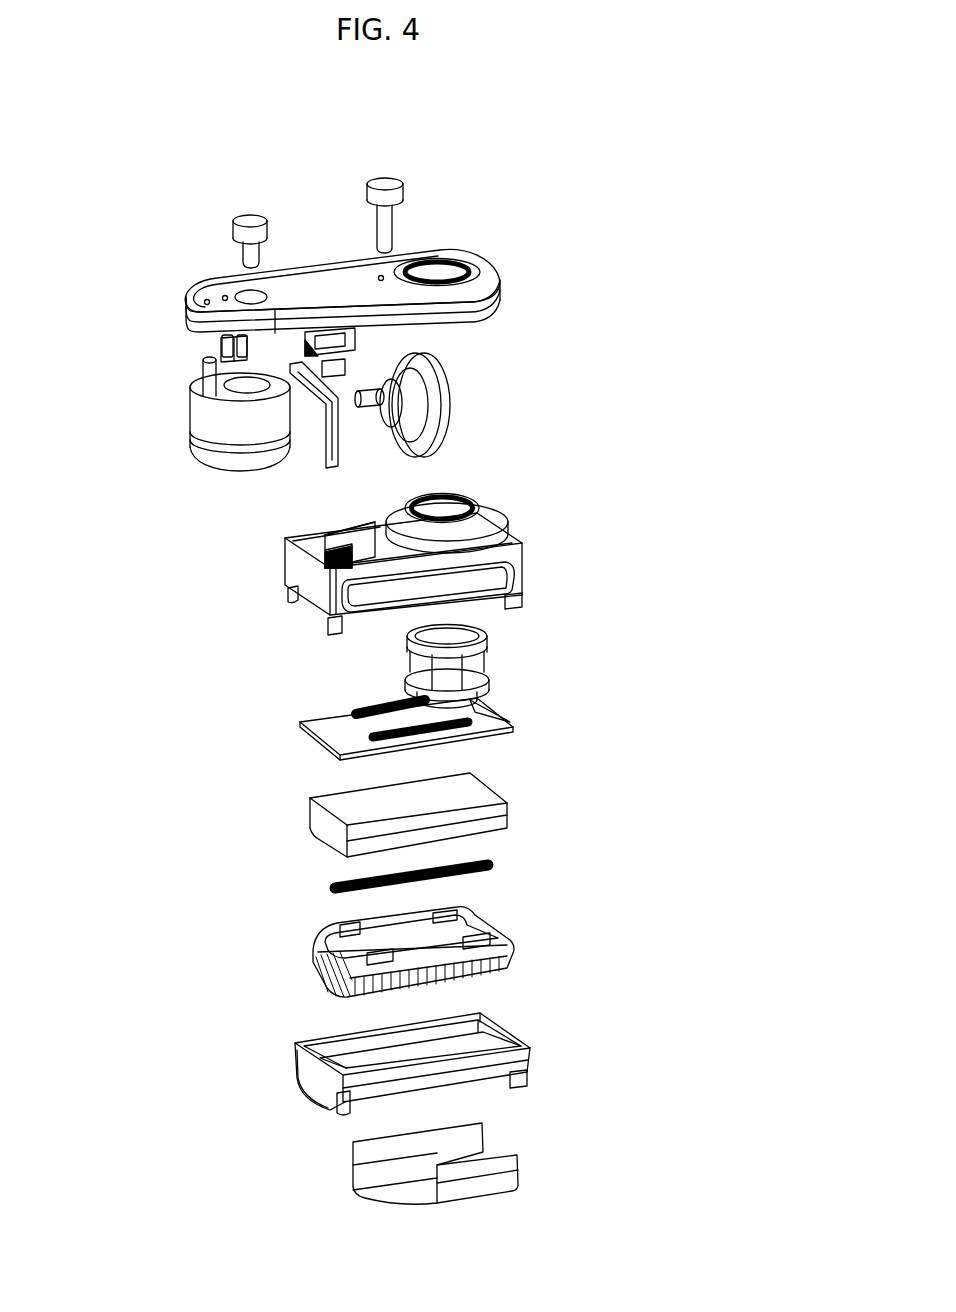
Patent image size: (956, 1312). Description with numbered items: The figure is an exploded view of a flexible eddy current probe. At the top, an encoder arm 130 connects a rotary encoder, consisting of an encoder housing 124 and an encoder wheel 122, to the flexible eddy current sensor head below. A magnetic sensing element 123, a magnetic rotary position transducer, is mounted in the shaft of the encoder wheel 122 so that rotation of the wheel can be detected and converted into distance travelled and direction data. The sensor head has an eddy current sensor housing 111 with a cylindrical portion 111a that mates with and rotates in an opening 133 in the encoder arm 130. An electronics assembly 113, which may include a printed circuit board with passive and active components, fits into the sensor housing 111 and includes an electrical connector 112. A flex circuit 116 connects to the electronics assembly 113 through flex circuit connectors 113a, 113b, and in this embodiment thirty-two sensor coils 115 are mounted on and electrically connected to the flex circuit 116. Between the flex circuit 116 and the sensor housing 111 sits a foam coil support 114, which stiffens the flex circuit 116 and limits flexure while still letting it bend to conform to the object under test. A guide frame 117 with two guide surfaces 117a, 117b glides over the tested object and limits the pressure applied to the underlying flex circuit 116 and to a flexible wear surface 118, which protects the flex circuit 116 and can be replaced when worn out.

The encoder arm 130 is at (500, 270).
The opening 133 is at (457, 267).
The encoder housing 124 is at (188, 416).
The magnetic sensing element 123 is at (387, 420).
The encoder wheel 122 is at (450, 398).
The eddy current sensor housing 111 is at (527, 576).
The cylindrical portion 111a is at (483, 503).
The electrical connector 112 is at (487, 639).
The electronics assembly 113 is at (514, 725).
The flex circuit connector 113a is at (370, 706).
The flex circuit connector 113b is at (425, 747).
The foam coil support 114 is at (505, 800).
The sensor coils 115 is at (492, 867).
The flex circuit 116 is at (508, 941).
The guide frame 117 is at (530, 1047).
The guide surface 117a is at (310, 1090).
The guide surface 117b is at (530, 1078).
The flexible wear surface 118 is at (519, 1158).